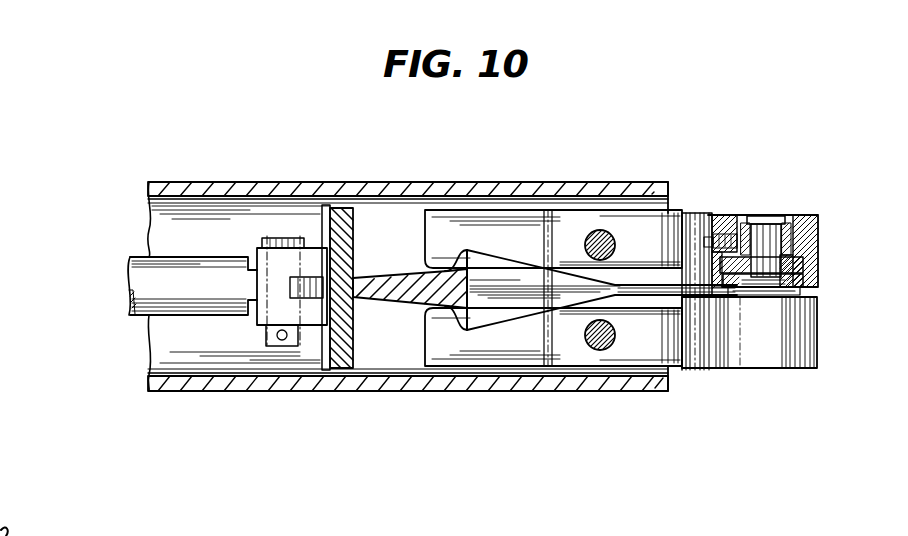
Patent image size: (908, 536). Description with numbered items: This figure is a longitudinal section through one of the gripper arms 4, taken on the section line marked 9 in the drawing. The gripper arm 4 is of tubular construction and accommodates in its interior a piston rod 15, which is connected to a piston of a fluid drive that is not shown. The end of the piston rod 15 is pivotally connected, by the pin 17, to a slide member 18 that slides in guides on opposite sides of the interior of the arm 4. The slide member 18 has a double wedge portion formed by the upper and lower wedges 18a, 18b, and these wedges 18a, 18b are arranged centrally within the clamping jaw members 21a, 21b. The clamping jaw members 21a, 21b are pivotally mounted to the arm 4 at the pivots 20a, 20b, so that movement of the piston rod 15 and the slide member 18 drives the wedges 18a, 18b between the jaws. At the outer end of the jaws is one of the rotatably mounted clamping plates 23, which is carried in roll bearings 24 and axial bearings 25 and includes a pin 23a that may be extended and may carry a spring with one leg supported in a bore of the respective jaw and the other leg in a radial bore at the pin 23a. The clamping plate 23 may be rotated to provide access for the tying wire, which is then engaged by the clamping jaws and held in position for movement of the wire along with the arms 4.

The gripper arm 4 is at (221, 180).
The piston rod 15 is at (192, 300).
The pin 17 is at (262, 241).
The slide member 18 is at (377, 210).
The double wedge portion 18a is at (422, 271).
The double wedge portion 18b is at (420, 302).
The clamping jaw member 21a is at (496, 208).
The clamping jaw member 21b is at (498, 356).
The pivot mounting 20a is at (615, 245).
The pivot mounting 20b is at (615, 335).
The clamping plate 23 is at (757, 302).
The pin 23a is at (772, 211).
The roll bearing 24 is at (819, 220).
The axial bearing 25 is at (819, 262).
The section line 9- 9 is at (113, 284).